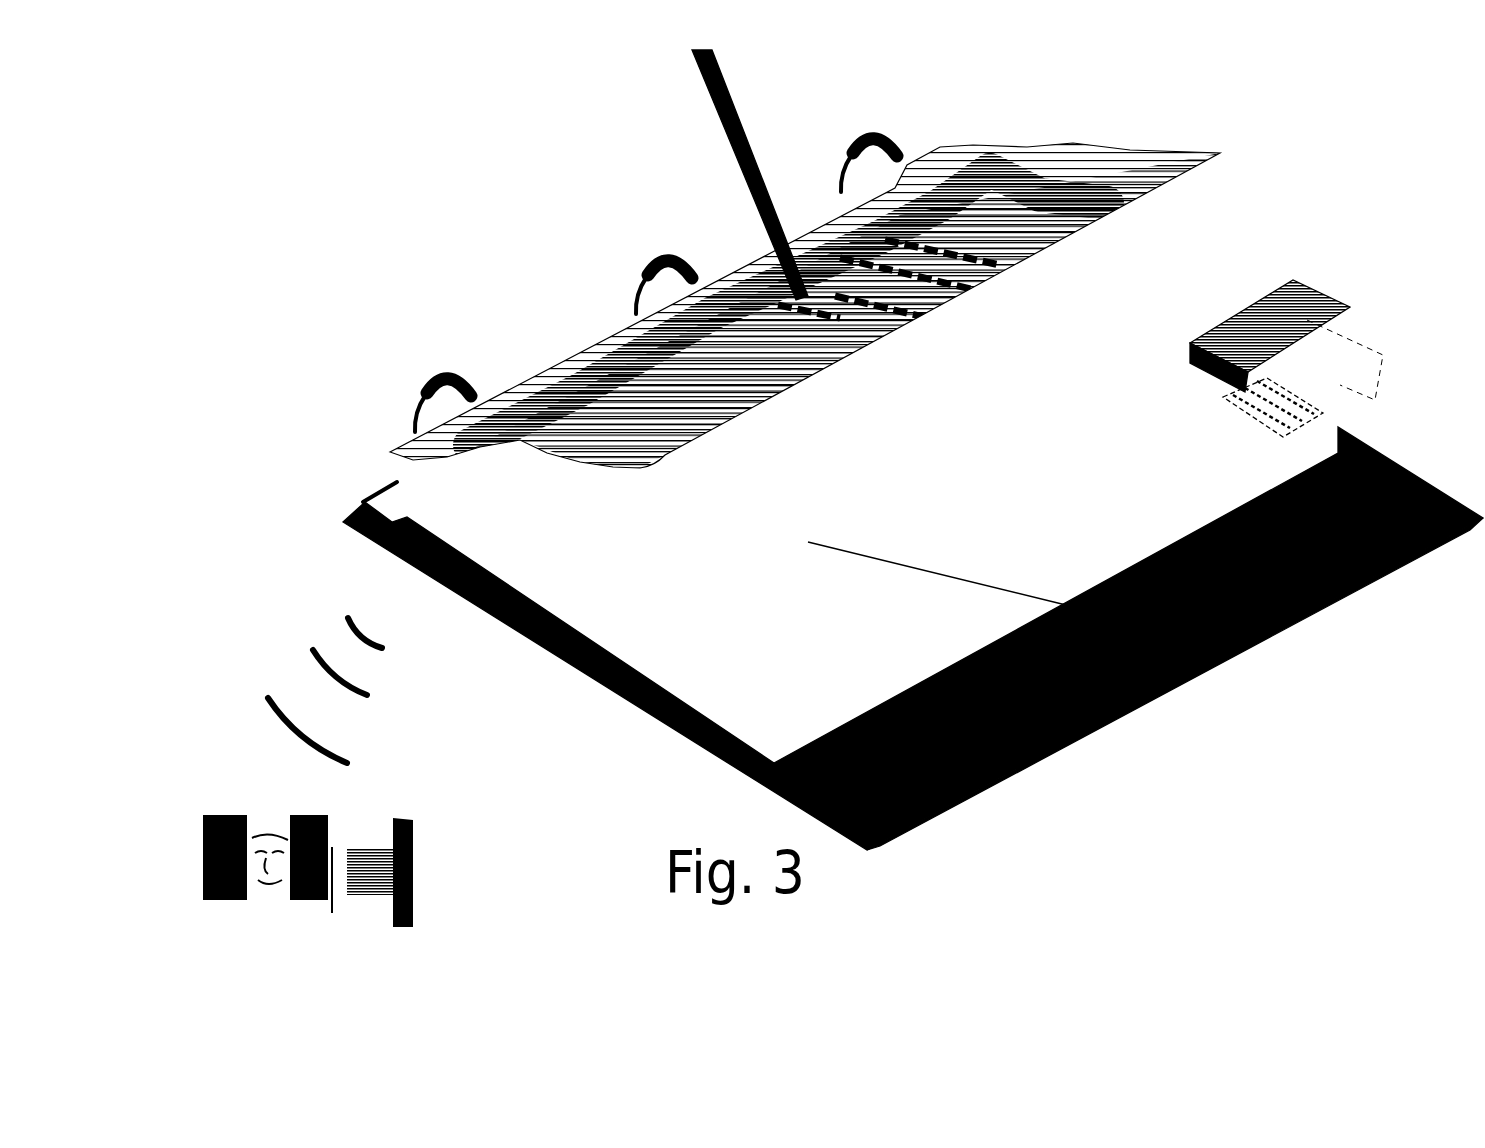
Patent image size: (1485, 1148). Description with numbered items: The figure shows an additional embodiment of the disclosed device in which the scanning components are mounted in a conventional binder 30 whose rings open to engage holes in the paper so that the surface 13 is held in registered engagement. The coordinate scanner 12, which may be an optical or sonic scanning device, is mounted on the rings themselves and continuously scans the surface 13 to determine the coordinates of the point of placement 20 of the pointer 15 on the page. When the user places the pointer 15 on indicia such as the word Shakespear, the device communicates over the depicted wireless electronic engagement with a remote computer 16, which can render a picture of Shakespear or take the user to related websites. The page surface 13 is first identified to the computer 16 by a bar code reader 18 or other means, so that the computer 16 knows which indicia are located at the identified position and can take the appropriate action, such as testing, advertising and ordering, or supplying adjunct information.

The coordinate scanner 12 is at (581, 297).
The surface 13 is at (1347, 416).
The pointer 15 is at (652, 175).
The computer 16 is at (360, 866).
The bar code reader 18 is at (1297, 305).
The point of placement 20 is at (913, 526).
The binder 30 is at (1175, 693).